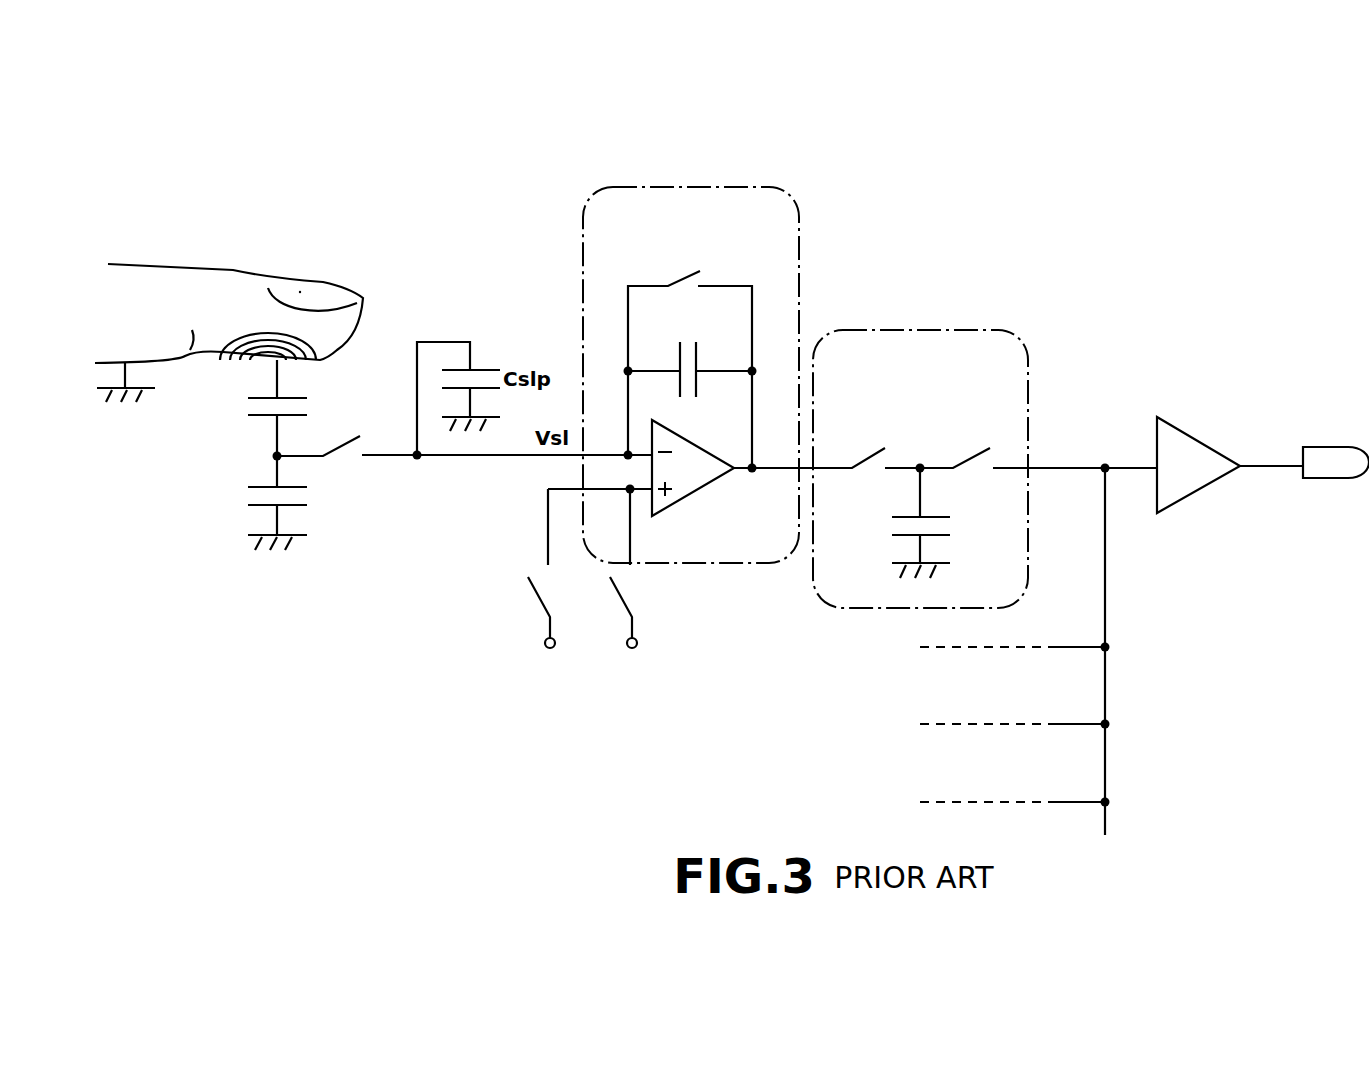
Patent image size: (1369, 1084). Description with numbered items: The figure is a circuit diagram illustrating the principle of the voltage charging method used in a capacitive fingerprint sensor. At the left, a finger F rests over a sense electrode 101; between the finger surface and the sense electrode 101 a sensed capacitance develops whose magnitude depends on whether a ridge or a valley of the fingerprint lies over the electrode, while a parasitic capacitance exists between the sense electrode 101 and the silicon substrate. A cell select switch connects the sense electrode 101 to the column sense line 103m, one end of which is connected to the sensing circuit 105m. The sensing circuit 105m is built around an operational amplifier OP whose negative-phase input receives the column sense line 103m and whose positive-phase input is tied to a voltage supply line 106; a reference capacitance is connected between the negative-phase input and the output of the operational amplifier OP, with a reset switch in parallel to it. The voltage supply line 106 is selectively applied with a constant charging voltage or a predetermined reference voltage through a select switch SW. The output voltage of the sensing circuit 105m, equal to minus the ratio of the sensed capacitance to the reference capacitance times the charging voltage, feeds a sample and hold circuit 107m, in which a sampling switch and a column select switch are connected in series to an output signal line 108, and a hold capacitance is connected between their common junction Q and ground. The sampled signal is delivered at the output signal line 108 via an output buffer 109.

The sense electrode 101 is at (176, 474).
The column sense line 103m is at (387, 458).
The sensing circuit 105m is at (691, 332).
The voltage supply line 106 is at (563, 491).
The sample & hold circuit 107m is at (920, 426).
The output signal line 108 is at (1073, 466).
The output buffer 109 is at (1188, 448).
The finger F is at (143, 264).
The select switch SW is at (450, 631).
The operational amplifier OP is at (693, 485).
The common junction Q is at (920, 468).